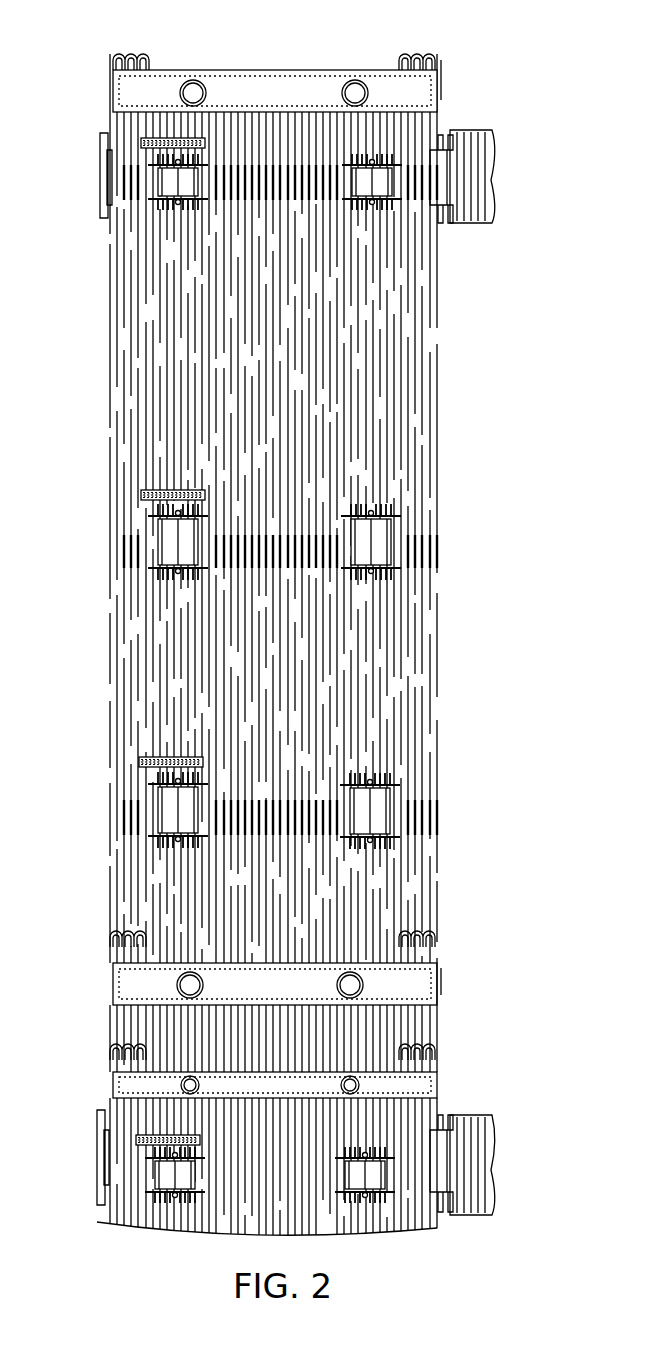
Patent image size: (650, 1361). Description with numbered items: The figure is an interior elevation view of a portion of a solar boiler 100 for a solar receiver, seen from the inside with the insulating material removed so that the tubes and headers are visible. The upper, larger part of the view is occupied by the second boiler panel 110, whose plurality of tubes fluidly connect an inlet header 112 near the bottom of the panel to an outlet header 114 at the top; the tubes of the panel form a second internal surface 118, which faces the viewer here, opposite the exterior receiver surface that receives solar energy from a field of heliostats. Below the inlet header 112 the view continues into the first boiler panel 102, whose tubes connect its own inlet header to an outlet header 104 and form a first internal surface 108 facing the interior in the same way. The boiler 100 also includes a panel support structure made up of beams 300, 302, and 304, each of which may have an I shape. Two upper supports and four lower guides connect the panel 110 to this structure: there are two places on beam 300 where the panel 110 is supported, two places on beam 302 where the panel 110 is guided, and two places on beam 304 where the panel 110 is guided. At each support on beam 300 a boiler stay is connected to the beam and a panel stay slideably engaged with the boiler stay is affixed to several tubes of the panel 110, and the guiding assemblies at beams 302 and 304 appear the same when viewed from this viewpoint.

The solar boiler 100 is at (512, 77).
The second boiler panel 110 is at (108, 400).
The outlet header 114 is at (268, 86).
The second internal surface 118 is at (294, 331).
The beam 300 is at (152, 198).
The beam 302 is at (152, 567).
The beam 304 is at (150, 784).
The inlet header 112 is at (291, 996).
The first boiler panel 102 is at (291, 1054).
The outlet header 104 is at (114, 1083).
The first internal surface 108 is at (291, 1183).